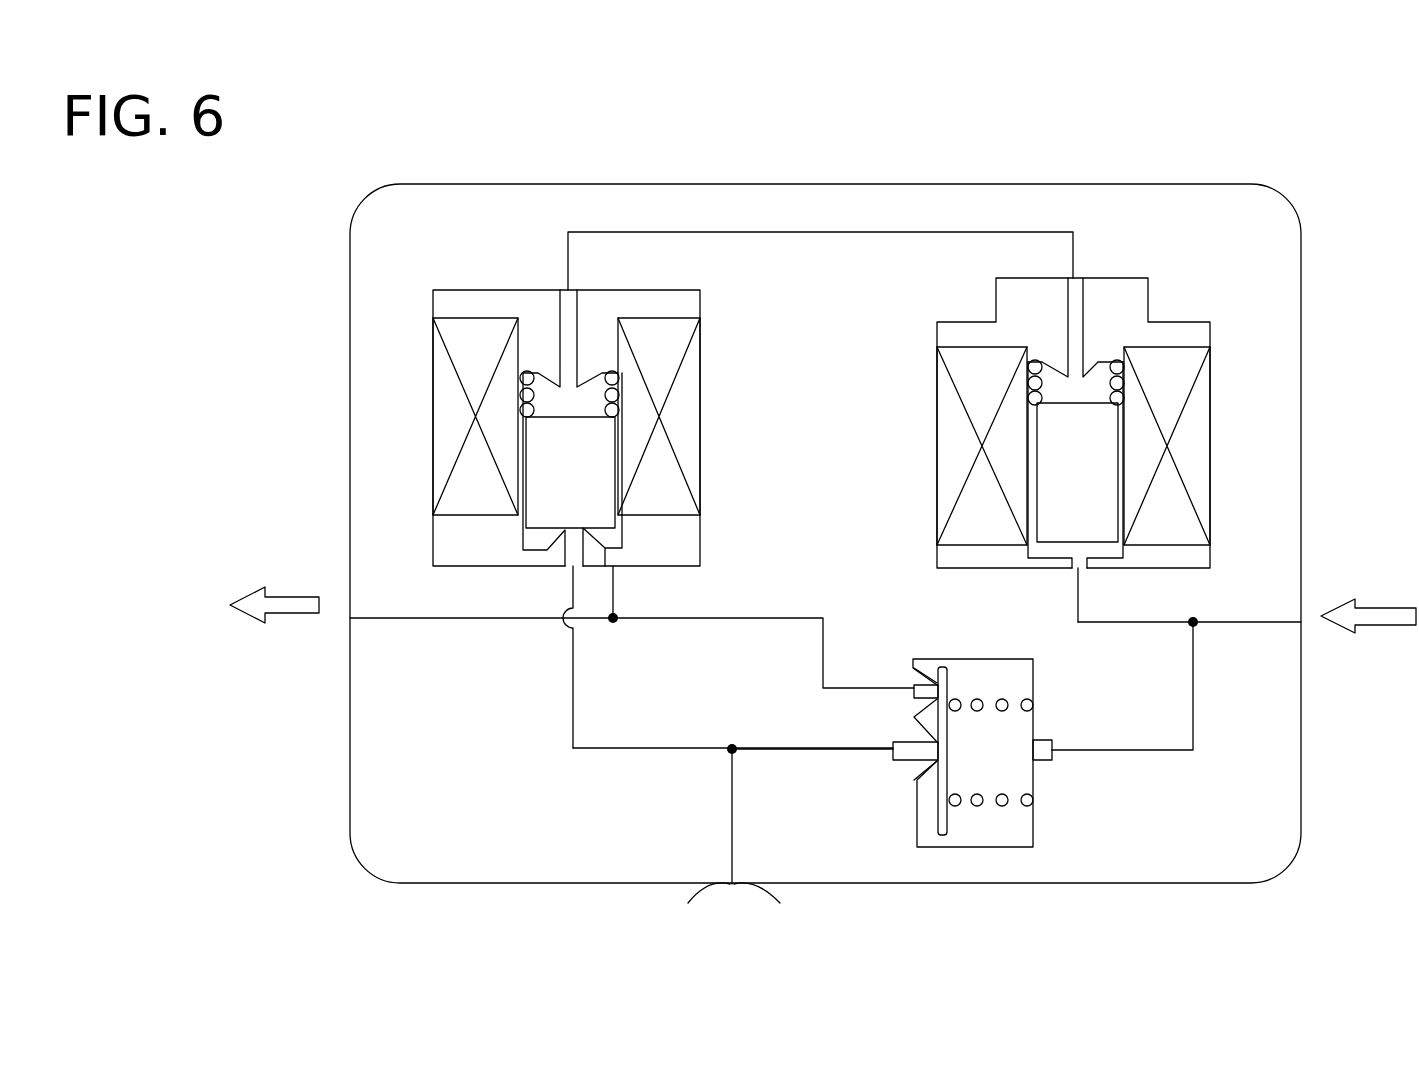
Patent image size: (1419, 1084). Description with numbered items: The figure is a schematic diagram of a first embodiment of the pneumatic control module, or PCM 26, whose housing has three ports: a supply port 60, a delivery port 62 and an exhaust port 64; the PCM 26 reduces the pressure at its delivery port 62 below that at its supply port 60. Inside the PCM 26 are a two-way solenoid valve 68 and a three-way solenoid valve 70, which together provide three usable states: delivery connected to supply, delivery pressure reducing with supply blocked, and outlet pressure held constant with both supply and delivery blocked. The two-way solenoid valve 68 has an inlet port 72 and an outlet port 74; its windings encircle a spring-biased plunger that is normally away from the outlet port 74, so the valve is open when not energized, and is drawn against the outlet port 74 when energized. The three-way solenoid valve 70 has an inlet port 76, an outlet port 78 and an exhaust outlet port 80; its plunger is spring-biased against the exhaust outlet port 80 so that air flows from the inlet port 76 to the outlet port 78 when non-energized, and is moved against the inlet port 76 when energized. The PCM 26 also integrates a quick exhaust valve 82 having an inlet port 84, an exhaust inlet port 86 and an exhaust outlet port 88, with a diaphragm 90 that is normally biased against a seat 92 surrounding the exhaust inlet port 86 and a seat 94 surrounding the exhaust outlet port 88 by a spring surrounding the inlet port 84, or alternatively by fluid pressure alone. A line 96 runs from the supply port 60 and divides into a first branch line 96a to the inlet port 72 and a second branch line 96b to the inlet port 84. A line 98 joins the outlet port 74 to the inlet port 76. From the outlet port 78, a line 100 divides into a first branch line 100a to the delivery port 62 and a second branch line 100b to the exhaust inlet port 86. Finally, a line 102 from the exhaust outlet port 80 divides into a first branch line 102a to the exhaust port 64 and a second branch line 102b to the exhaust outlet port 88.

The pneumatic control module 26 is at (686, 178).
The supply port 60 is at (1302, 623).
The delivery port 62 is at (350, 620).
The exhaust port 64 is at (731, 888).
The 2-way solenoid valve 68 is at (1167, 320).
The 3-way solenoid valve 70 is at (473, 288).
The inlet port 72 is at (1082, 570).
The outlet port 74 is at (1068, 278).
The inlet port 76 is at (577, 290).
The outlet port 78 is at (597, 568).
The exhaust outlet port 80 is at (565, 568).
The quick exhaust valve 82 is at (1020, 848).
The inlet port 84 is at (1053, 745).
The exhaust inlet port 86 is at (920, 688).
The exhaust outlet port 88 is at (893, 745).
The diaphragm 90 is at (940, 840).
The upper nozzle 92 is at (940, 664).
The seat 94 is at (930, 760).
The line 96 is at (1227, 622).
The first branch line 96a is at (1145, 625).
The second branch line 96b is at (1193, 723).
The line 98 is at (877, 226).
The line 100 is at (612, 595).
The first branch line 100a is at (447, 620).
The second branch line 100b is at (785, 618).
The line 102 is at (573, 695).
The first branch line 102a is at (732, 822).
The second branch line 102b is at (801, 752).